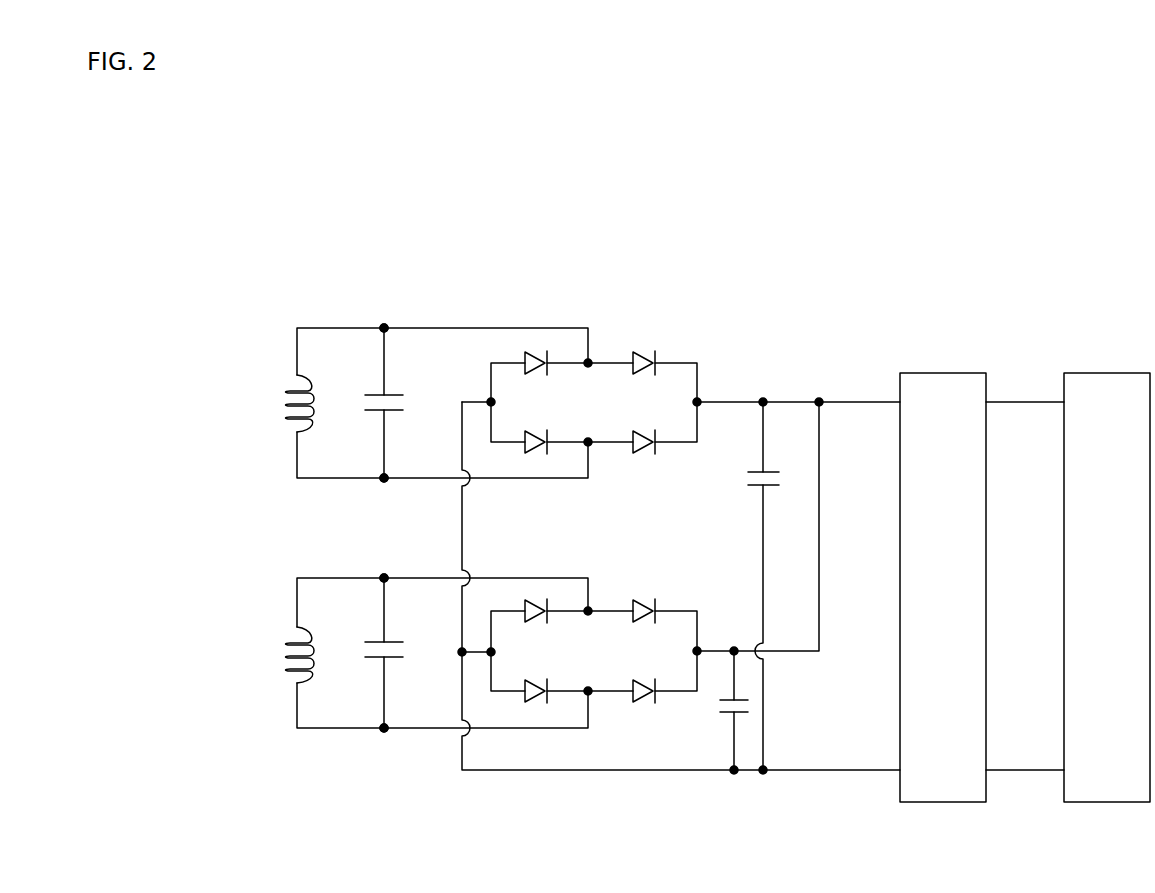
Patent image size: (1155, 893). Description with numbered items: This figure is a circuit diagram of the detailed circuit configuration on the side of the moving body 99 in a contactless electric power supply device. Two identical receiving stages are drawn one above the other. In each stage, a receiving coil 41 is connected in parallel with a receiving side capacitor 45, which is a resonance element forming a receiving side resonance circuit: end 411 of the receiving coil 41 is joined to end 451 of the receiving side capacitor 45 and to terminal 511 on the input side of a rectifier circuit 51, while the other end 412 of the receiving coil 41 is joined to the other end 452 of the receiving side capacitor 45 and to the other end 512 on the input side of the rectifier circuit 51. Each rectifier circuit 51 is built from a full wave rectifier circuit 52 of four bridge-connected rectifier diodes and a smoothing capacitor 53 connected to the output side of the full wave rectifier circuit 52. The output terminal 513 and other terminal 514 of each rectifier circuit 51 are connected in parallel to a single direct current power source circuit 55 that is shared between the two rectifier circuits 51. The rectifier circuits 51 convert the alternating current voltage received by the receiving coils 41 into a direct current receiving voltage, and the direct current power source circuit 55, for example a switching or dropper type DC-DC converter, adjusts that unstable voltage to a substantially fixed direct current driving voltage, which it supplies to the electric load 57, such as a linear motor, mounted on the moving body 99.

The moving body 99 is at (257, 216).
The receiving coil 41 is at (283, 398).
The receiving side capacitor 45 is at (368, 404).
The end of receiving coil 411 is at (384, 325).
The end of receiving side capacitor 451 is at (423, 413).
The other end of receiving coil 412 is at (383, 481).
The other end of receiving side capacitor 452 is at (375, 636).
The rectifier circuit 51 is at (775, 248).
The full wave rectifier circuit 52 is at (664, 343).
The smoothing capacitor 53 is at (751, 475).
The terminal on input side of rectifier circuit 511 is at (590, 360).
The other end on input side of rectifier circuit 512 is at (589, 444).
The terminal on output side of rectifier circuit 513 is at (765, 400).
The other terminal on output side of rectifier circuit 514 is at (734, 773).
The direct current power source circuit 55 is at (962, 597).
The electric load 57 is at (1125, 597).